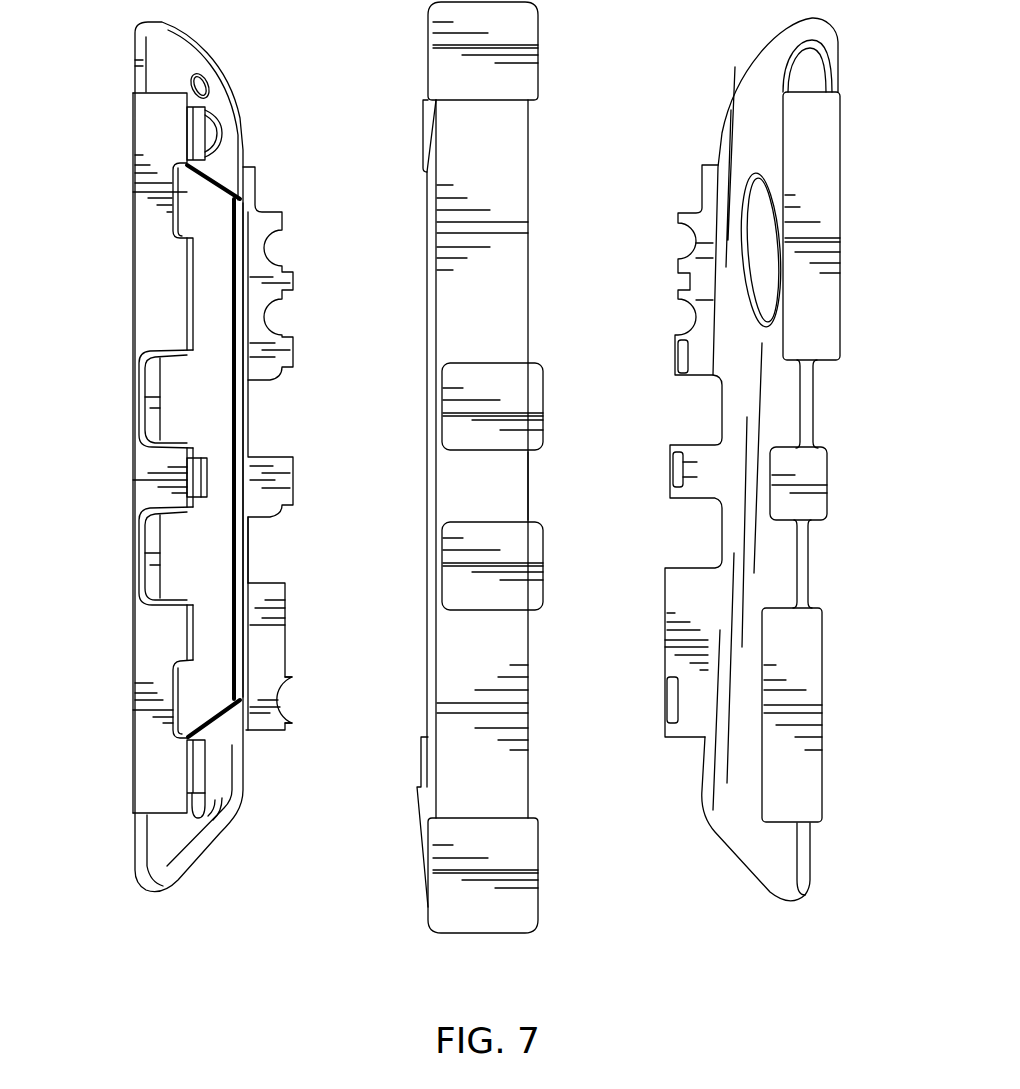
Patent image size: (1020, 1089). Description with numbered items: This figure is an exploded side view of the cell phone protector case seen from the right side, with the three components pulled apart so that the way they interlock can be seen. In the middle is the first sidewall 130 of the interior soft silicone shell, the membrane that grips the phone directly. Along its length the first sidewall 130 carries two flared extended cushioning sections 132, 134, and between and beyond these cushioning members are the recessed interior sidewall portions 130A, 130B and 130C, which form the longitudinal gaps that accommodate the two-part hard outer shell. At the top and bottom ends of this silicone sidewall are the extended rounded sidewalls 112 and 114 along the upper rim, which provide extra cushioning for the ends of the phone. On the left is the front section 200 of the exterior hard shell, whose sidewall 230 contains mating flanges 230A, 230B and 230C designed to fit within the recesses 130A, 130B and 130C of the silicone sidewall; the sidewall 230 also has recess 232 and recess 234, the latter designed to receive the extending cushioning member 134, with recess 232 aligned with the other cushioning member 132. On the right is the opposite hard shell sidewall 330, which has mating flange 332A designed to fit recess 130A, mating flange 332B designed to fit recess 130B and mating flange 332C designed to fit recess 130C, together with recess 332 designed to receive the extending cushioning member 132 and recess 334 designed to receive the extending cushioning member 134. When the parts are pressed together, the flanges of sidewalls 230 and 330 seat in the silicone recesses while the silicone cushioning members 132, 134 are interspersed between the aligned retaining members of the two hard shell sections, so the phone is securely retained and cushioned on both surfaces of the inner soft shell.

The front section 200 is at (247, 57).
The sidewall 230 is at (135, 79).
The mating flange 230A is at (145, 129).
The mating flange 230B is at (133, 463).
The mating flange 230C is at (143, 668).
The recess 232 is at (148, 376).
The recess 234 is at (148, 542).
The extended rounded sidewall 112 is at (522, 23).
The extended rounded sidewall 114 is at (523, 844).
The first sidewall 130 is at (512, 132).
The interior sidewall portion 130A is at (527, 264).
The interior sidewall portion 130B is at (512, 484).
The interior sidewall portion 130C is at (512, 648).
The extended cushioning section 132 is at (530, 388).
The extended cushioning section 134 is at (528, 547).
The sidewall 330 is at (838, 60).
The recess 332 is at (805, 400).
The mating flange 332A is at (832, 148).
The mating flange 332B is at (813, 468).
The mating flange 332C is at (805, 653).
The recess 334 is at (803, 563).